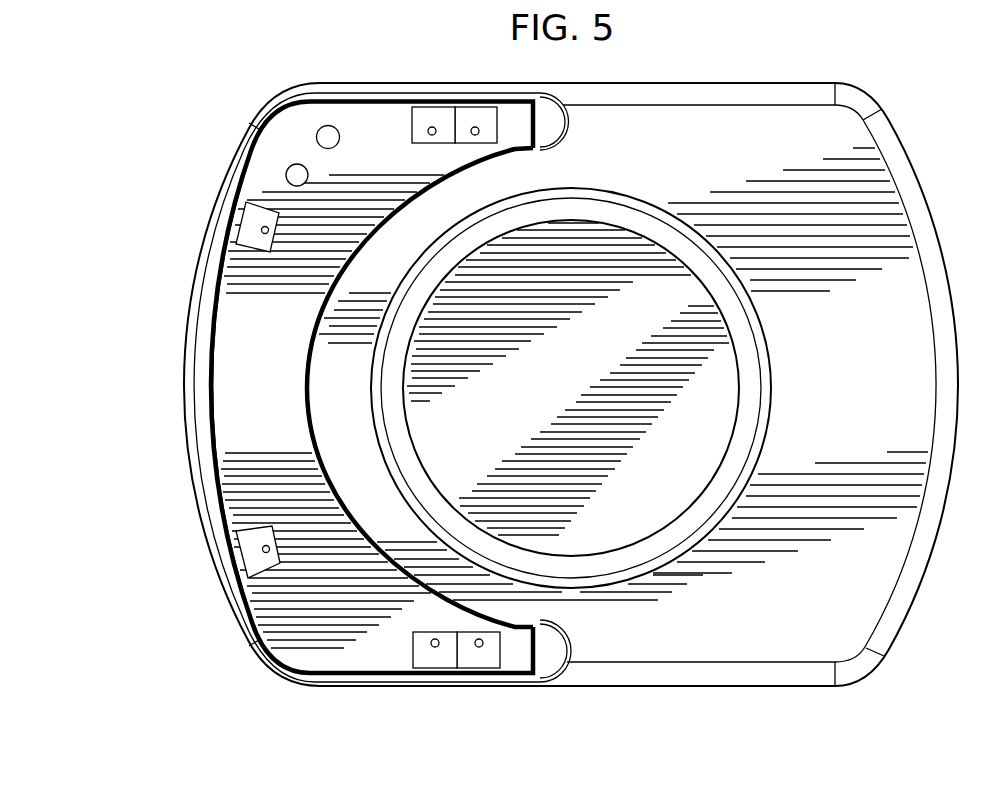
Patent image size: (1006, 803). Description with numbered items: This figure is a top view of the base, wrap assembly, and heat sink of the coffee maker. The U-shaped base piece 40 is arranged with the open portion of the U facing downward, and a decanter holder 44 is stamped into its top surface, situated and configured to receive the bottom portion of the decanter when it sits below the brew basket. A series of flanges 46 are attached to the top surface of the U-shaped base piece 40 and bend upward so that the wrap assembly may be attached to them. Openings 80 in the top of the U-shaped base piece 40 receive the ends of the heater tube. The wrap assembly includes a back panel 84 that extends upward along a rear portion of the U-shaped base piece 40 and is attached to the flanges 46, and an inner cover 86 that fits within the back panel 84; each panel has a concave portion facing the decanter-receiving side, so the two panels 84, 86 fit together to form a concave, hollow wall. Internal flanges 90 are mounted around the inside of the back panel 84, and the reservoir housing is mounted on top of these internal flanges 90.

The U-shaped base piece 40 is at (183, 372).
The decanter holder 44 is at (577, 387).
The flanges 46 is at (487, 113).
The openings 80 is at (328, 124).
The back panel 84 is at (214, 389).
The inner cover 86 is at (309, 385).
The internal flanges 90 is at (424, 116).